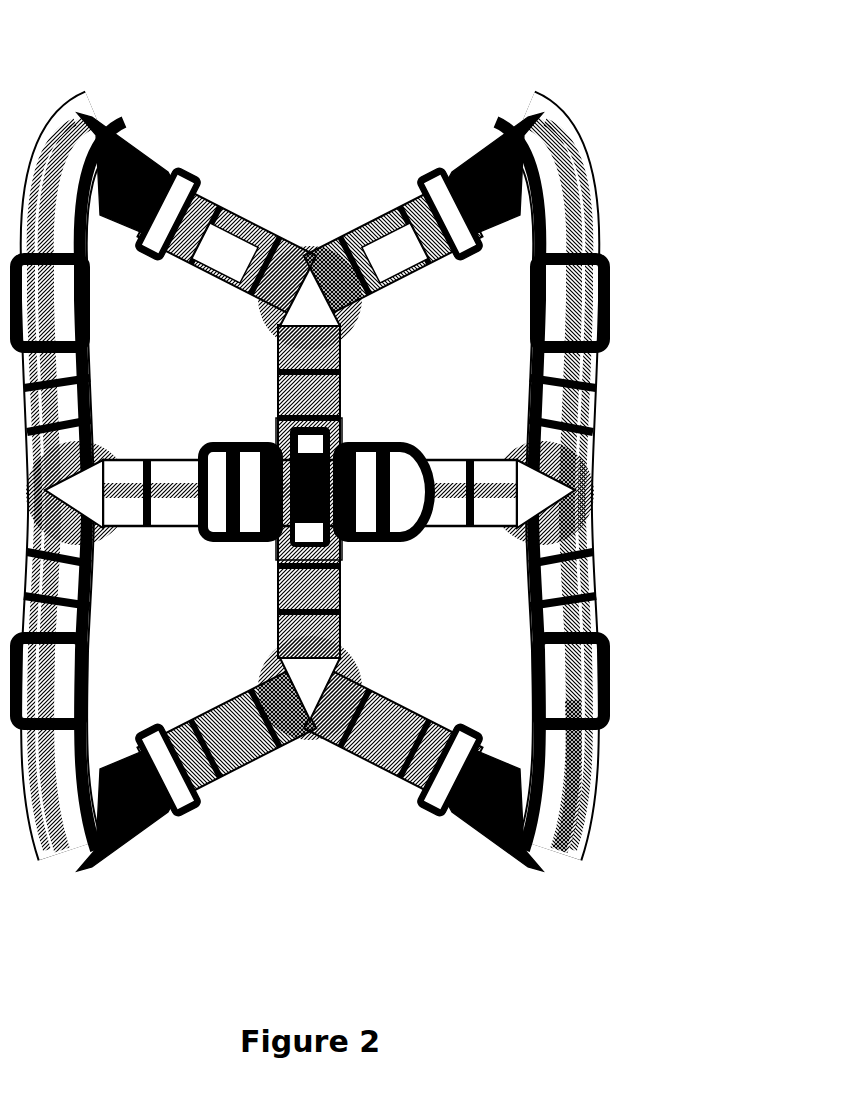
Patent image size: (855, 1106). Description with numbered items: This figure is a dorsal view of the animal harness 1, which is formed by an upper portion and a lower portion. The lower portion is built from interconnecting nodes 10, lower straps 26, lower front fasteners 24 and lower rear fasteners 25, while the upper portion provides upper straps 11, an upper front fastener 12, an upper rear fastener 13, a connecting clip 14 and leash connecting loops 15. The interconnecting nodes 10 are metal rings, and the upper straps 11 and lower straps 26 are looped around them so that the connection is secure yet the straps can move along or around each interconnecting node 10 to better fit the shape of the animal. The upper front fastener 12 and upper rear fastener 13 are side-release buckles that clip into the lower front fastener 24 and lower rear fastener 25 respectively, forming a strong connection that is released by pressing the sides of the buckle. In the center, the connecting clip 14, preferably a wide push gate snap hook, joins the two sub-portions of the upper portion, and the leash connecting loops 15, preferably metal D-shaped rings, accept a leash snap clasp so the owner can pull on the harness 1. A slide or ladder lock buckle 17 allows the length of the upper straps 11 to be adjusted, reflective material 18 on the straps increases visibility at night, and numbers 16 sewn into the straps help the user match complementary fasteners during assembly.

The harness 1 is at (323, 163).
The interconnecting node 10 is at (592, 485).
The upper strap 11 is at (593, 750).
The upper front fastener 12 is at (548, 118).
The upper rear fastener 13 is at (580, 943).
The connecting clip 14 is at (333, 487).
The leash connecting loop 15 is at (430, 507).
The numbers 16 is at (225, 247).
The slide or ladder lock buckle 17 is at (607, 258).
The reflective material 18 is at (568, 808).
The lower front fastener 24 is at (437, 177).
The lower rear fastener 25 is at (428, 800).
The lower strap 26 is at (398, 213).